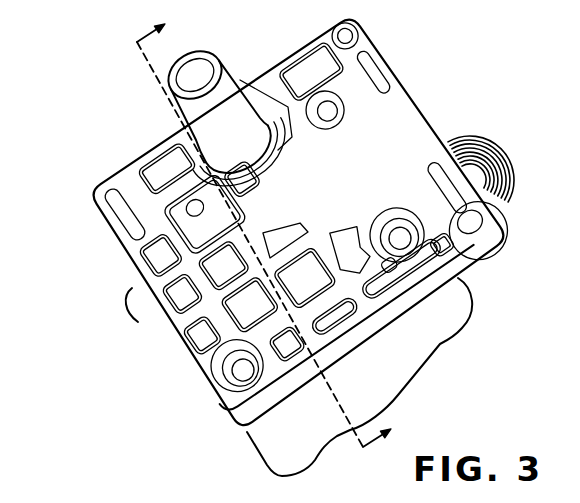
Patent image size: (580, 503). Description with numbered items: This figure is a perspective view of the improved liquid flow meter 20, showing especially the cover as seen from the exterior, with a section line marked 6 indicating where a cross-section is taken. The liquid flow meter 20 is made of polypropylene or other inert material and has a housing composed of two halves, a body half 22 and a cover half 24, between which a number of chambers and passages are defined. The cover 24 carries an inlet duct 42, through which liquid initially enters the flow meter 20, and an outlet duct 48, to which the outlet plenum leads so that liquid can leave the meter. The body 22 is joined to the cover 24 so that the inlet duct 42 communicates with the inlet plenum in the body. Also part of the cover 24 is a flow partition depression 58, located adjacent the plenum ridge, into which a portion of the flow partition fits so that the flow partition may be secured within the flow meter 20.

The liquid flow meter 20 is at (157, 137).
The body half 22 is at (138, 322).
The cover half 24 is at (458, 337).
The inlet duct 42 is at (228, 70).
The outlet duct 48 is at (462, 142).
The flow partition depression 58 is at (570, 156).
The section line 6- 6 is at (245, 250).